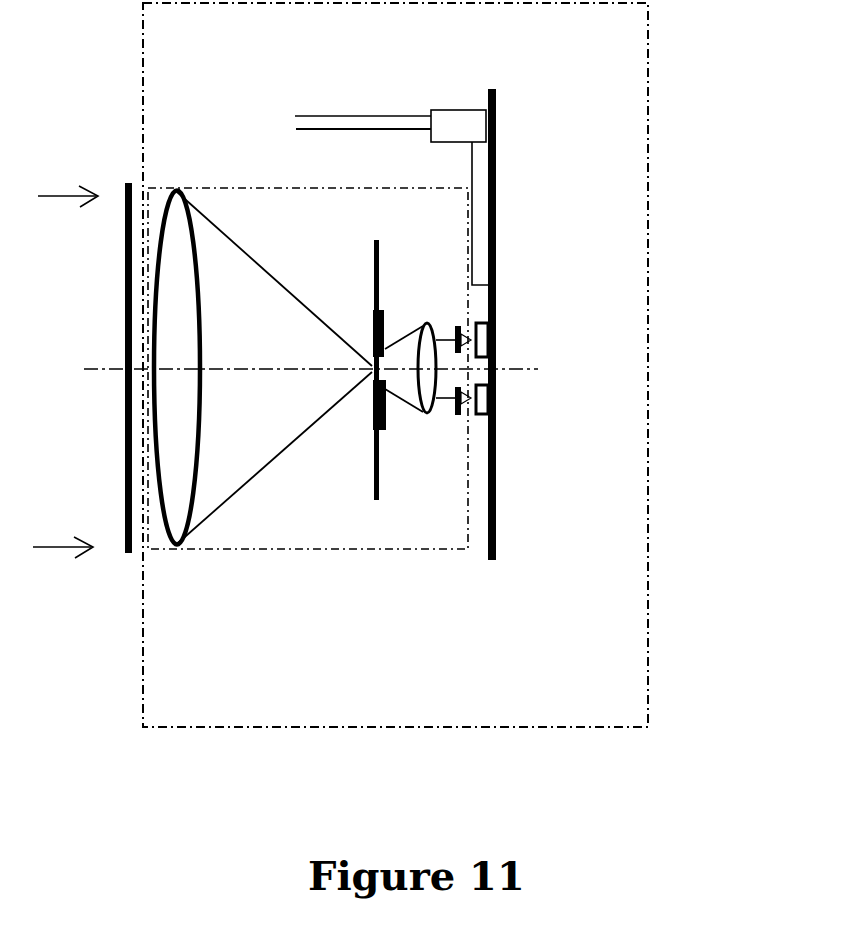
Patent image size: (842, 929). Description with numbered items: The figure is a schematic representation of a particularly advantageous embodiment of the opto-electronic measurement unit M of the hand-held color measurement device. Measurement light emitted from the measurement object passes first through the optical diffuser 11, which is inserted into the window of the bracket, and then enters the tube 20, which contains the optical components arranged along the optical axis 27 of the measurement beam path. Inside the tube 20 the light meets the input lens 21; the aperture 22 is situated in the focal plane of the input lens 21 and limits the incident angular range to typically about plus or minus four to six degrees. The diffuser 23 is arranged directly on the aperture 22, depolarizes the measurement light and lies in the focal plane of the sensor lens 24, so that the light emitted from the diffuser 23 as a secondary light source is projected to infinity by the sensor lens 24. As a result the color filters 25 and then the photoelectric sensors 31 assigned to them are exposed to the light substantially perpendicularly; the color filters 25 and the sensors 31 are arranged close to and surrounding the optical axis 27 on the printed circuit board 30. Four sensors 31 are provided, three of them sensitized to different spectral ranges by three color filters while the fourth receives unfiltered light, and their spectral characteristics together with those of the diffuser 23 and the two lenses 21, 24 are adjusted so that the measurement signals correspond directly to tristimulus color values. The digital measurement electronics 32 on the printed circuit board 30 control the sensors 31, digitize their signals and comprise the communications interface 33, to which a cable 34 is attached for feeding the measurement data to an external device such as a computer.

The opto-electronic measurement unit M is at (625, 88).
The tube 20 is at (316, 549).
The optical axis 27 is at (84, 369).
The optical diffuser 11 is at (127, 350).
The input lens 21 is at (178, 480).
The aperture 22 is at (372, 283).
The diffuser 23 is at (386, 425).
The sensor lens 24 is at (427, 320).
The color filters 25 is at (460, 325).
The photoelectric sensors 31 is at (495, 332).
The printed circuit board 30 is at (498, 528).
The digital measurement electronics 32 is at (477, 163).
The communications interface 33 is at (455, 118).
The cable 34 is at (328, 123).